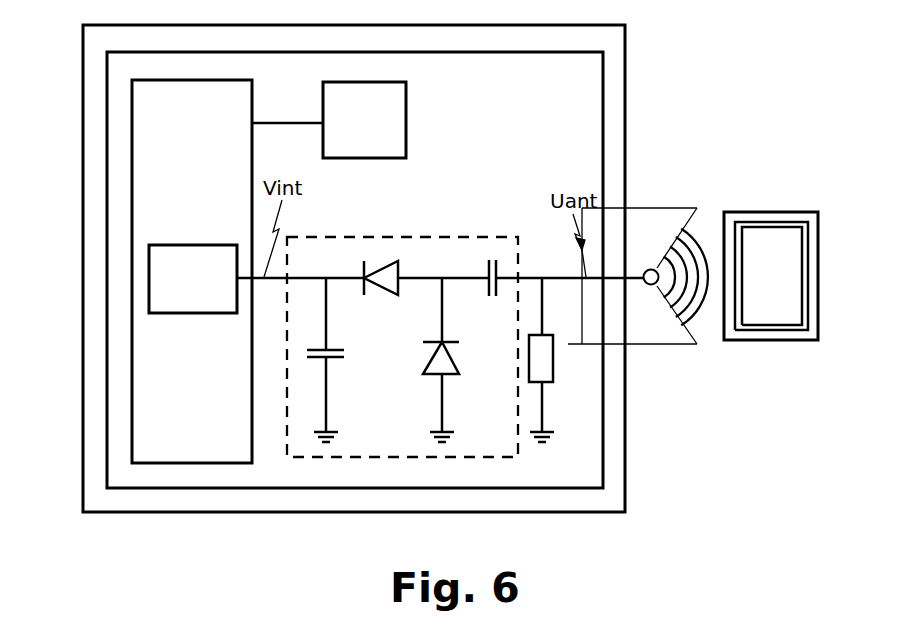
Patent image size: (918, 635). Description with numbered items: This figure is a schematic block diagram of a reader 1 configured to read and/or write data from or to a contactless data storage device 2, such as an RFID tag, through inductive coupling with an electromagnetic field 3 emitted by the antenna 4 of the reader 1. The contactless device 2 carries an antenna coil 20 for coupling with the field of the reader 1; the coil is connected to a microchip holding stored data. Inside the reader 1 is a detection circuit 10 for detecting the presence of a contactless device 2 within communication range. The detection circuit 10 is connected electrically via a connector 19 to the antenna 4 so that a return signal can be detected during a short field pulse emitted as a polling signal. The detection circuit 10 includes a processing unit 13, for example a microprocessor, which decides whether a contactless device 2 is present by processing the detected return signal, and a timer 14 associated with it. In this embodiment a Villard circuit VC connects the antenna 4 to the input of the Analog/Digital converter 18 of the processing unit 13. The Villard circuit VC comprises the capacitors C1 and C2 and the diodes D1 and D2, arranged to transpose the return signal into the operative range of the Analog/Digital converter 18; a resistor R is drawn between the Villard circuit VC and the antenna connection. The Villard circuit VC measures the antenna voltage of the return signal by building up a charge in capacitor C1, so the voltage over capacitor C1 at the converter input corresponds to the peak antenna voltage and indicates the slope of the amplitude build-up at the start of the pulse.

The reader 1 is at (102, 538).
The contactless data storage device 2 is at (811, 355).
The electromagnetic field 3 is at (691, 196).
The antenna 4 is at (651, 285).
The detection circuit 10 is at (592, 82).
The processing unit 13 is at (142, 371).
The timer 14 is at (395, 105).
The Analog/Digital converter 18 is at (160, 292).
The connector 19 is at (615, 276).
The antenna coil 20 is at (787, 228).
The diode D1 is at (384, 241).
The diode D2 is at (463, 390).
The capacitor C1 is at (346, 376).
The capacitor C2 is at (500, 239).
The resistor R is at (543, 353).
The Villard circuit VC is at (440, 245).